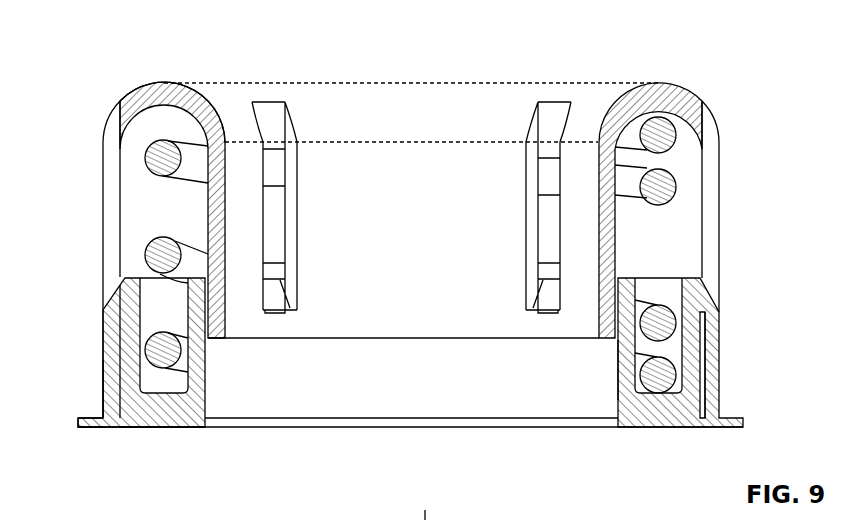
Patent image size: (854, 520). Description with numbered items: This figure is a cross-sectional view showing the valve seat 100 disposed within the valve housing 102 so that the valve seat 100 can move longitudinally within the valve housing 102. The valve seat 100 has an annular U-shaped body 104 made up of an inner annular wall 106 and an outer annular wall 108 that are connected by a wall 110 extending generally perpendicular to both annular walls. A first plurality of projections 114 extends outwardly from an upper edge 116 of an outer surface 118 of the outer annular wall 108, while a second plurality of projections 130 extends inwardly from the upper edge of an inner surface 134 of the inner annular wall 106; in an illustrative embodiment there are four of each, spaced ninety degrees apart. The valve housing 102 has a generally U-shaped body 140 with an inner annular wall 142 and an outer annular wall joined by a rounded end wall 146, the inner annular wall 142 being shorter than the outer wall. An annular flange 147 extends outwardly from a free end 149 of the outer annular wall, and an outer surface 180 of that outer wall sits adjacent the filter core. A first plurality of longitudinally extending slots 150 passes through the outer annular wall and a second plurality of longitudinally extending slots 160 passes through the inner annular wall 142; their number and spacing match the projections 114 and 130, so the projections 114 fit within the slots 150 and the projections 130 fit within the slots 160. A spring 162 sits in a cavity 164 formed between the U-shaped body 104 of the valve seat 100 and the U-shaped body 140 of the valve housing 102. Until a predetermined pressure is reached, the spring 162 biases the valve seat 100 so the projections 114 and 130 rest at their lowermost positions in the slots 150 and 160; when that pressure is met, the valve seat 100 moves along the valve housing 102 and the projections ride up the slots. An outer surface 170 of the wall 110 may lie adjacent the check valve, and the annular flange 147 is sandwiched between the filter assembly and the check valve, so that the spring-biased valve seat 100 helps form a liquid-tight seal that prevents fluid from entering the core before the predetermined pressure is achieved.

The valve seat 100 is at (652, 428).
The valve housing 102 is at (697, 97).
The U-shaped body 104 is at (620, 407).
The inner annular wall 106 is at (705, 366).
The outer annular wall 108 is at (620, 382).
The wall 110 is at (672, 418).
The first plurality of projections 114 is at (118, 296).
The upper edge 116 is at (705, 325).
The outer surface 118 is at (705, 350).
The second plurality of projections 130 is at (294, 298).
The inner surface 134 is at (338, 403).
The U-shaped body 140 is at (103, 343).
The inner annular wall 142 is at (224, 153).
The rounded end wall 146 is at (163, 80).
The annular flange 147 is at (90, 428).
The free end 149 is at (103, 410).
The first plurality of longitudinally extending slots 150 is at (94, 158).
The second plurality of longitudinally extending slots 160 is at (292, 179).
The spring 162 is at (676, 131).
The cavity 164 is at (684, 252).
The outer surface 170 is at (162, 428).
The outer surface 180 is at (103, 380).